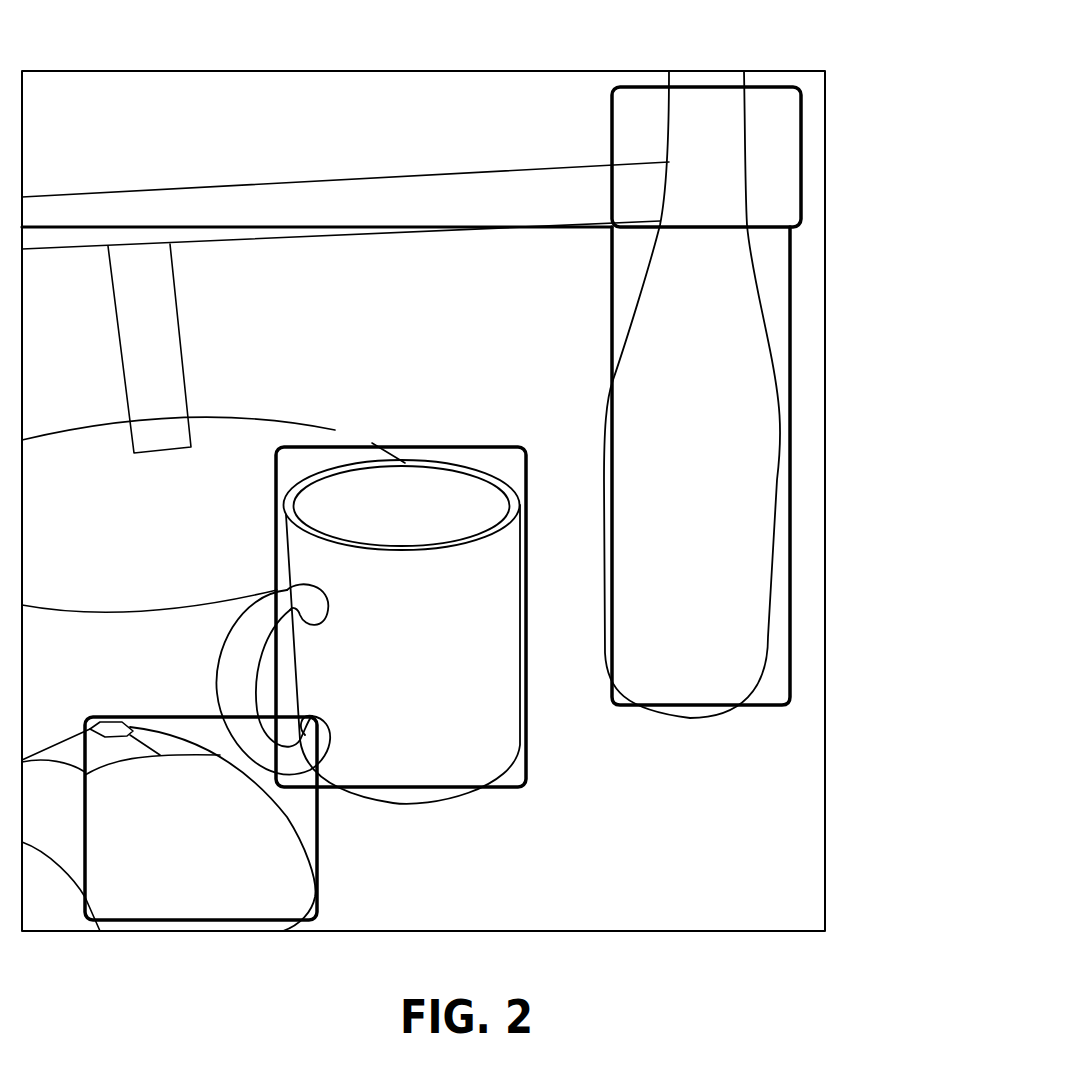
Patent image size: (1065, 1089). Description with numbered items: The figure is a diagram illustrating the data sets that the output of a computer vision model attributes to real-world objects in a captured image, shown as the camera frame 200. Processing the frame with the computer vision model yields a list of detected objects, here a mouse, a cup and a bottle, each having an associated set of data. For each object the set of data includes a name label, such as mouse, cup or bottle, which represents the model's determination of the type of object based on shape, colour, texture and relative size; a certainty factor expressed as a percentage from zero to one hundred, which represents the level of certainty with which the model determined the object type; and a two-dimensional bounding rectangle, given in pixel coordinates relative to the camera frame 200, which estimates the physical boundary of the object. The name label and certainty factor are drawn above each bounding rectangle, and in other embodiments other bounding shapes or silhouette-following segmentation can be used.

The camera frame 200 is at (826, 857).